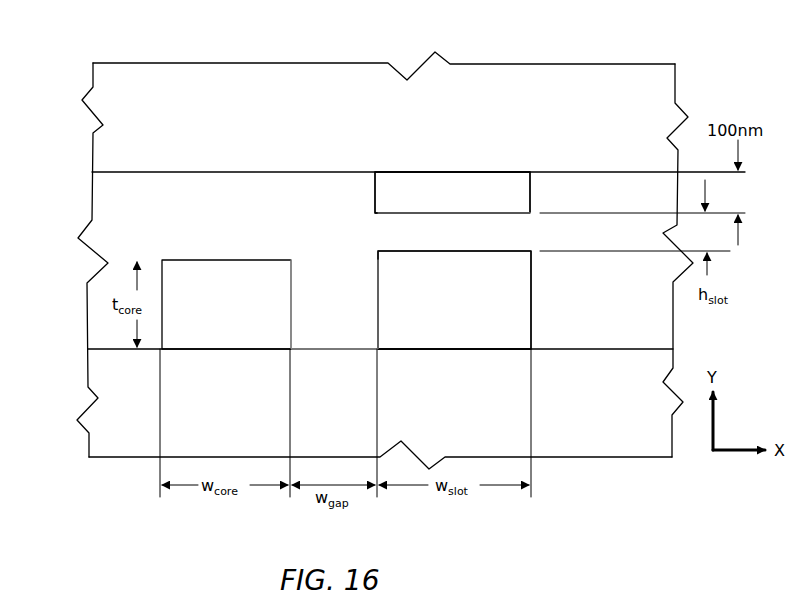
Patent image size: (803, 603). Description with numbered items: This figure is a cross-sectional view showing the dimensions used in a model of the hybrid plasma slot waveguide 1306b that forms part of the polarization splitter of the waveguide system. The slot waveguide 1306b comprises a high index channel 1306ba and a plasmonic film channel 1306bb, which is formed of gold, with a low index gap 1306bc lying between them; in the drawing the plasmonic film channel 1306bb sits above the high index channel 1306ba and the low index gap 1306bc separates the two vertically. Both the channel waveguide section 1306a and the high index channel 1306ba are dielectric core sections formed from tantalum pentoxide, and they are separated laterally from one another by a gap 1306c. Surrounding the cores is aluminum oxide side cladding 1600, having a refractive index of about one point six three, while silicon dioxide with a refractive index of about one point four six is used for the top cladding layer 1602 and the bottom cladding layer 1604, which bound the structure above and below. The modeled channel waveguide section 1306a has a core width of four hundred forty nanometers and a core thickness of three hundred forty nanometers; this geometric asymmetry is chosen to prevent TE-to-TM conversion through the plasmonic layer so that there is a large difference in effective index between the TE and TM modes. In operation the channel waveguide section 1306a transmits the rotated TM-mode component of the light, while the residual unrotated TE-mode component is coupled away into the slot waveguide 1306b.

The side cladding 1600 is at (106, 203).
The top cladding layer 1602 is at (102, 86).
The bottom cladding layer 1604 is at (102, 406).
The channel waveguide section 1306a is at (226, 304).
The slot waveguide 1306b is at (500, 105).
The high index channel 1306ba is at (454, 300).
The plasmonic film channel 1306bb is at (452, 192).
The low index gap 1306bc is at (454, 232).
The gap 1306c is at (334, 294).